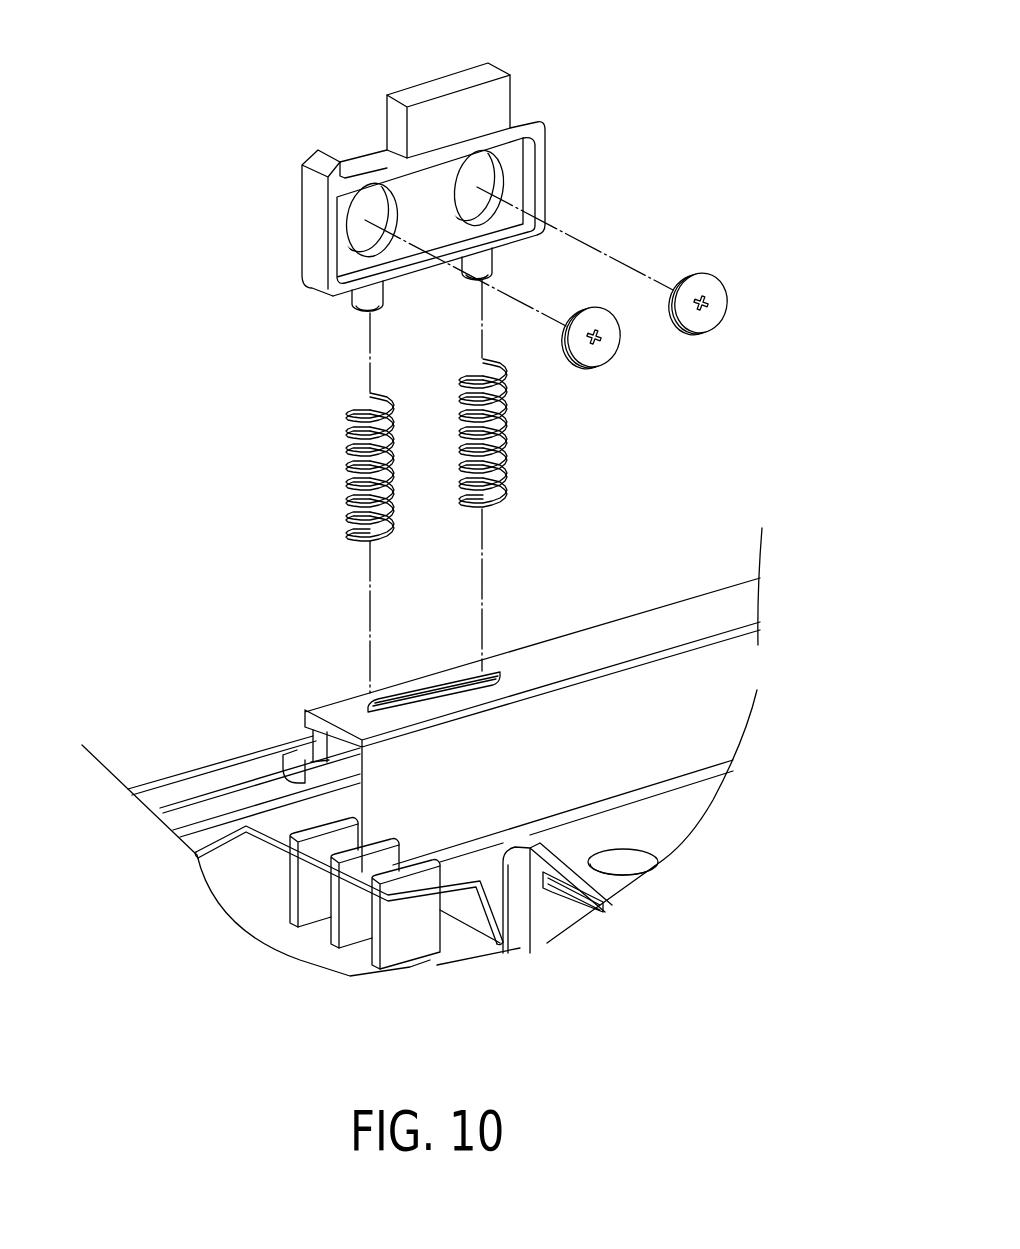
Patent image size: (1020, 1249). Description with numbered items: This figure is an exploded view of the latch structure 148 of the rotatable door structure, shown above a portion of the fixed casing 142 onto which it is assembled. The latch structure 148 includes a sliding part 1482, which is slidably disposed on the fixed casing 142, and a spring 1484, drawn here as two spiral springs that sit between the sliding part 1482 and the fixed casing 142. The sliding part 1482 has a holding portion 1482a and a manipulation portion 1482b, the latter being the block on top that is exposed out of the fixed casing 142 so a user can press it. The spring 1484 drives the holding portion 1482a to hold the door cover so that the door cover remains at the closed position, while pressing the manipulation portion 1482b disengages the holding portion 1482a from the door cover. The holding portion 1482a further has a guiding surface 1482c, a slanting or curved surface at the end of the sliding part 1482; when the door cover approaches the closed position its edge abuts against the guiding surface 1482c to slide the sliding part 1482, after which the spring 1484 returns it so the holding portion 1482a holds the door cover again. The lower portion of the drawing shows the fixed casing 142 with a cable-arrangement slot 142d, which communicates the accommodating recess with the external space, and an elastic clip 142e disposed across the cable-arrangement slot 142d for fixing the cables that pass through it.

The latch structure 148 is at (146, 246).
The sliding part 1482 is at (305, 232).
The holding portion 1482a is at (324, 126).
The manipulation portion 1482b is at (458, 97).
The guiding surface 1482c is at (316, 168).
The spring 1484 is at (348, 480).
The fixed casing 142 is at (638, 693).
The cable-arrangement slot 142d is at (429, 816).
The elastic clip 142e is at (318, 867).